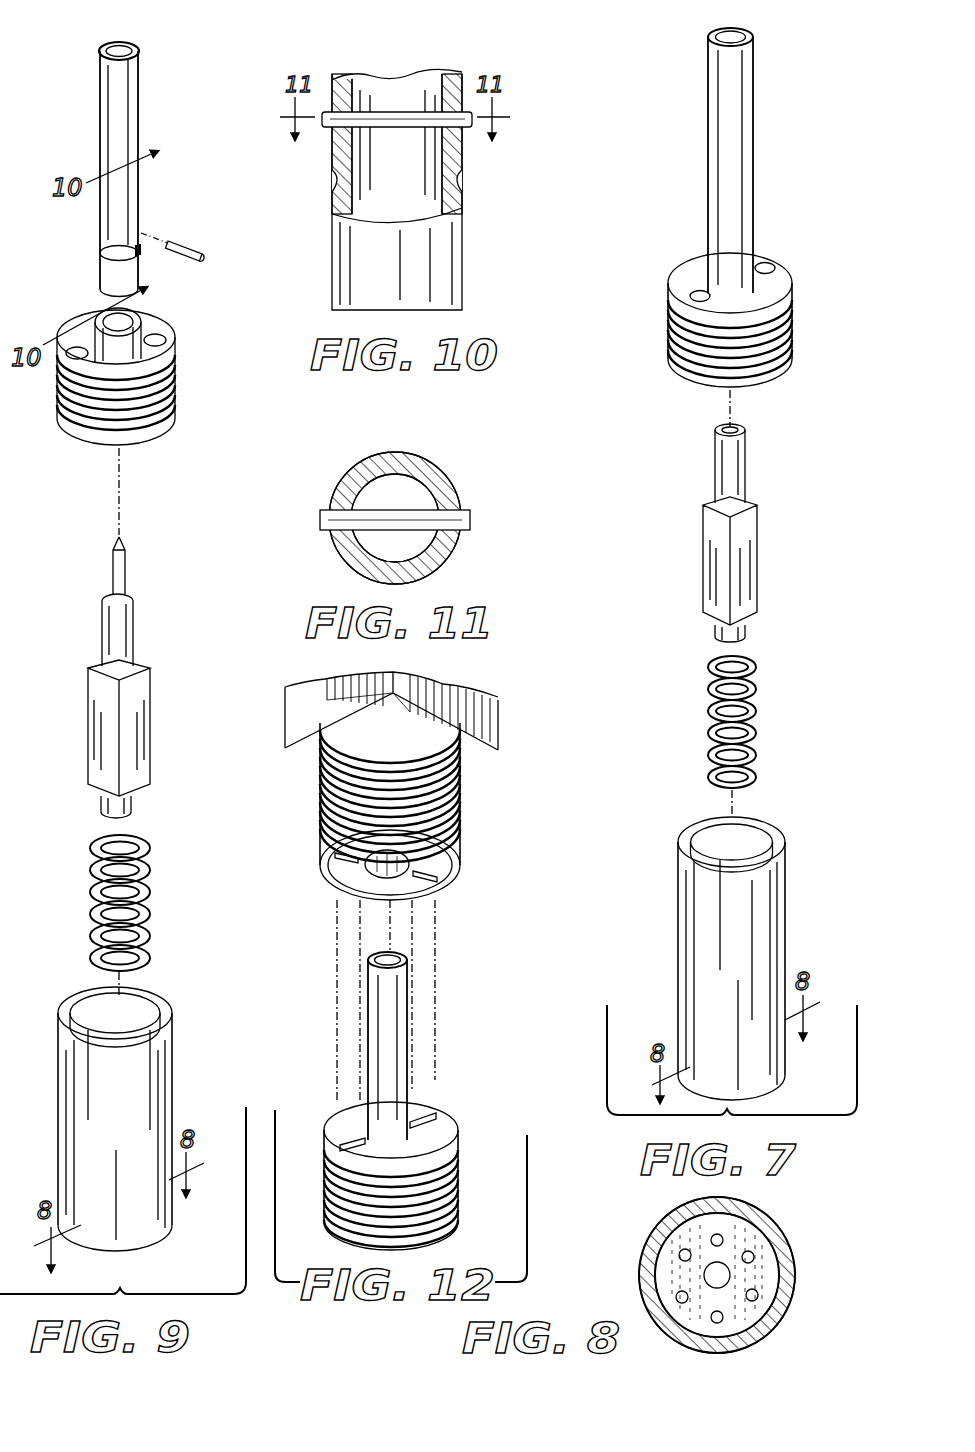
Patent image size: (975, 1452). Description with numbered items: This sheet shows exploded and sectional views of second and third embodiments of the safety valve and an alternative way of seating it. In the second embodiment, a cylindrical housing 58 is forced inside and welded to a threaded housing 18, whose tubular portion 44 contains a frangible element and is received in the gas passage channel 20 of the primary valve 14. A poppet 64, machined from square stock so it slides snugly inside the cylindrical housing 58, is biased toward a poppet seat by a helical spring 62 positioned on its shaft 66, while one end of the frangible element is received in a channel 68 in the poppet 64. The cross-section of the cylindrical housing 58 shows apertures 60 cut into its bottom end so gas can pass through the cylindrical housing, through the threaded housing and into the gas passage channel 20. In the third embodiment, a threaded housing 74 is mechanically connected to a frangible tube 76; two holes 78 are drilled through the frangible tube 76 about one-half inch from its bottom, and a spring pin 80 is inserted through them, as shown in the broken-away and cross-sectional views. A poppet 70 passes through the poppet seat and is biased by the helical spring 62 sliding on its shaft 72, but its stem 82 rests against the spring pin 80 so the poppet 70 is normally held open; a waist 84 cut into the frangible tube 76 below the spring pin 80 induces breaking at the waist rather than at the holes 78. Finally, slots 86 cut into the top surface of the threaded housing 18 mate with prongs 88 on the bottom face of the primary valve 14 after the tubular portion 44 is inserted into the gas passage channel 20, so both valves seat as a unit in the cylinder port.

In FIG. 12, the primary valve 14 is at (490, 704).
In FIG. 12, the threaded housing 18 is at (453, 1188).
In FIG. 7, the threaded housing 18 is at (778, 281).
In FIG. 12, the gas passage channel 20 is at (456, 858).
In FIG. 12, the tubular portion 44 is at (408, 1056).
In FIG. 7, the tubular portion 44 is at (753, 154).
In FIG. 9, the cylindrical housing 58 is at (173, 1085).
In FIG. 7, the cylindrical housing 58 is at (786, 924).
In FIG. 8, the cylindrical housing 58 is at (660, 1236).
In FIG. 8, the apertures 60 is at (752, 1295).
In FIG. 9, the helical spring 62 is at (152, 940).
In FIG. 7, the helical spring 62 is at (757, 736).
In FIG. 7, the poppet 64 is at (757, 550).
In FIG. 7, the shaft 66 is at (745, 625).
In FIG. 7, the channel 68 is at (746, 430).
In FIG. 9, the poppet 70 is at (144, 750).
In FIG. 9, the shaft 72 is at (137, 798).
In FIG. 9, the threaded housing 74 is at (155, 322).
In FIG. 9, the frangible tube 76 is at (138, 190).
In FIG. 10, the frangible tube 76 is at (463, 250).
In FIG. 11, the frangible tube 76 is at (446, 480).
In FIG. 9, the holes 78 is at (131, 231).
In FIG. 9, the spring pin 80 is at (202, 250).
In FIG. 10, the spring pin 80 is at (436, 129).
In FIG. 11, the spring pin 80 is at (470, 520).
In FIG. 9, the stem 82 is at (134, 574).
In FIG. 9, the waist 84 is at (100, 246).
In FIG. 12, the slots 86 is at (434, 1114).
In FIG. 12, the prongs 88 is at (433, 886).